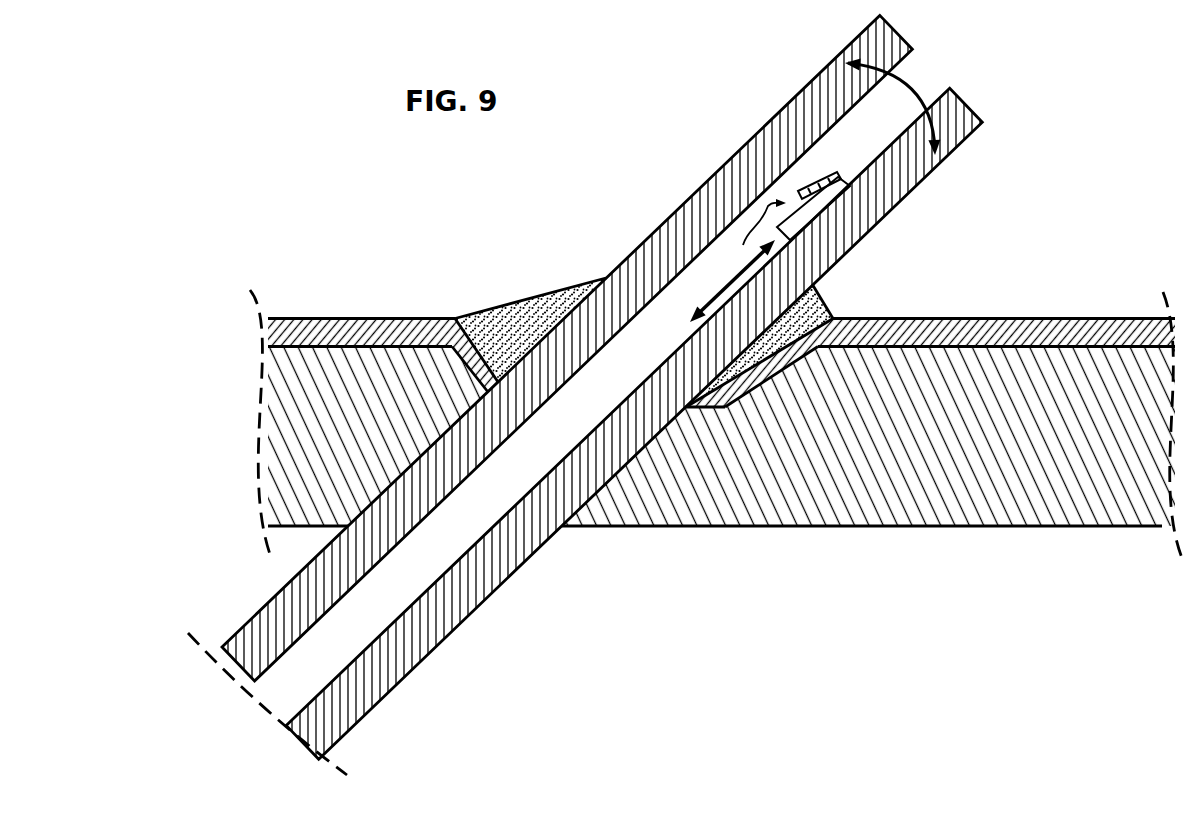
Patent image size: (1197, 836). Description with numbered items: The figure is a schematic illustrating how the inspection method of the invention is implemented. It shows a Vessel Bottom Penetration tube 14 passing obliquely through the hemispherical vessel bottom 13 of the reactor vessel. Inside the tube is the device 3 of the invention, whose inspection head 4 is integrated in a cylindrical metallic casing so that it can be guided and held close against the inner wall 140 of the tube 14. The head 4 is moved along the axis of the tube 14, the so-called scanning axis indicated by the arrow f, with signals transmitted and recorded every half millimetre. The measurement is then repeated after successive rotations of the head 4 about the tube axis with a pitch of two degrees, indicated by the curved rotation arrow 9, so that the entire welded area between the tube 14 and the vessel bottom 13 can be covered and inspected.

The hemispherical bottom 13 is at (952, 452).
The Vessel Bottom Penetration tube 14 is at (645, 200).
The device 3 is at (641, 361).
The inspection head 4 is at (732, 281).
The inner wall 140 is at (822, 138).
The rotation arrow 9 is at (917, 90).
The scanning axis arrow f is at (636, 391).